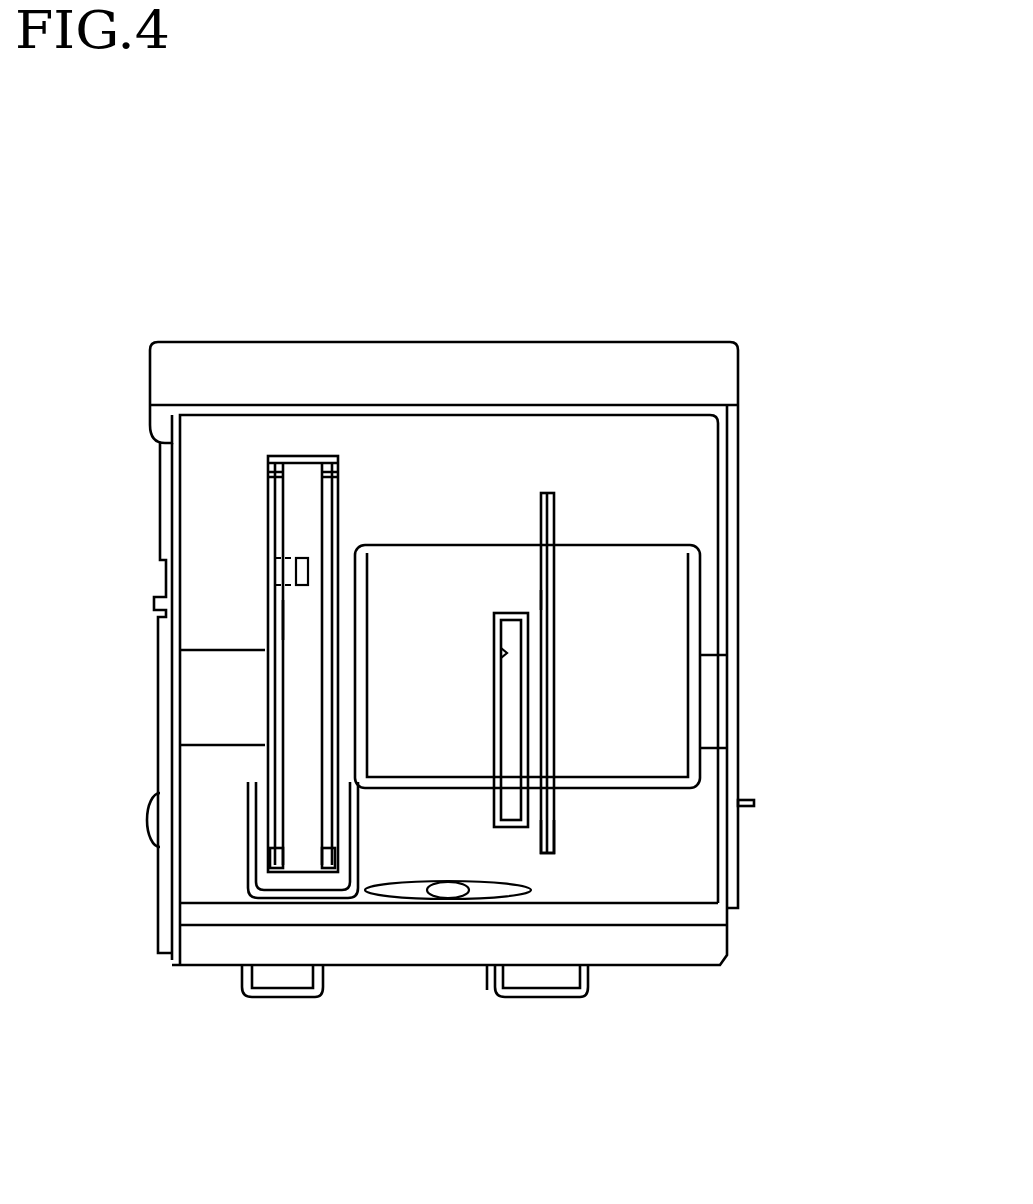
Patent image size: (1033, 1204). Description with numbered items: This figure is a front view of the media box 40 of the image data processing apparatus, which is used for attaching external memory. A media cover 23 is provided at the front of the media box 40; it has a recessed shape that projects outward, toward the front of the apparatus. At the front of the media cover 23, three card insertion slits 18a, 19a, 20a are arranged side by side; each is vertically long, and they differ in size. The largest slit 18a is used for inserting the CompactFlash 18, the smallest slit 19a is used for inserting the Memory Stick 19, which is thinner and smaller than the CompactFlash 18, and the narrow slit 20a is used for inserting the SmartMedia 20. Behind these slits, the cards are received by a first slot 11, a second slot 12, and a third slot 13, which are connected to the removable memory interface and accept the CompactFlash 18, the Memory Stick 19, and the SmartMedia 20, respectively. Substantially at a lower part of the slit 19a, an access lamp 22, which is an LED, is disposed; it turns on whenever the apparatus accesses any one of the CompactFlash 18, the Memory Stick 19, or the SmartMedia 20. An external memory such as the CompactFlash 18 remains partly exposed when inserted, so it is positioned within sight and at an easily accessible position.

The media box 40 is at (607, 237).
The first slot 11 is at (296, 452).
The second slot 12 is at (513, 602).
The third slot 13 is at (558, 482).
The CompactFlash 18 is at (308, 572).
The card insertion slit 18a is at (290, 617).
The Memory Stick 19 is at (513, 693).
The card insertion slit 19a is at (505, 648).
The SmartMedia 20 is at (560, 833).
The card insertion slit 20a is at (555, 600).
The access lamp 22 is at (445, 893).
The media cover 23 is at (673, 507).